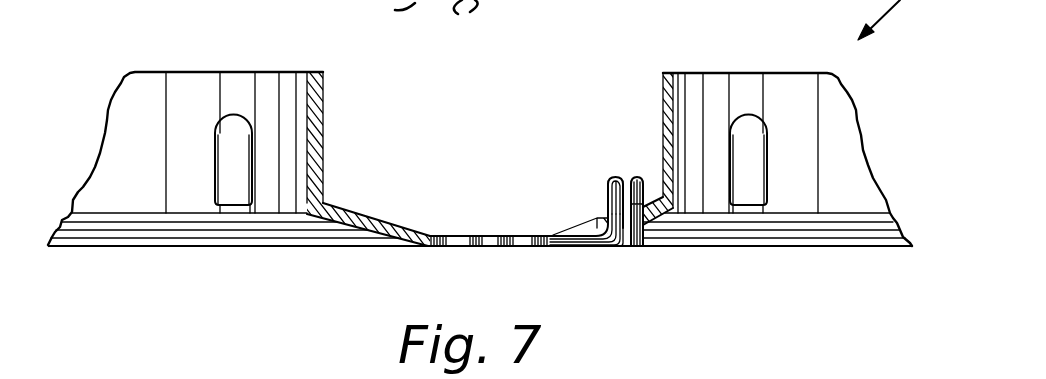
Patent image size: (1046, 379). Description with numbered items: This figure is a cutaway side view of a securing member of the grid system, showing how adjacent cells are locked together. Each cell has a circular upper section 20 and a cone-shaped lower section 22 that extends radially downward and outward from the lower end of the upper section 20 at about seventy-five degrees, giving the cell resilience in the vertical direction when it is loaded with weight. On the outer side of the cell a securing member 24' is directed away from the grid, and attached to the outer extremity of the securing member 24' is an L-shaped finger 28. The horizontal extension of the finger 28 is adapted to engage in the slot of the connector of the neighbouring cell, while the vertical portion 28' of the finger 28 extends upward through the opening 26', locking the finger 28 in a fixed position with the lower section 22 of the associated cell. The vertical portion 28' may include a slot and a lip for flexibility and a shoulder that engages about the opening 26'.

The upper section 20 is at (128, 72).
The lower section 22 is at (362, 212).
The securing member 24' is at (490, 212).
The opening 26' is at (584, 212).
The vertical portion 28' is at (609, 173).
The L-shaped finger 28 is at (614, 246).